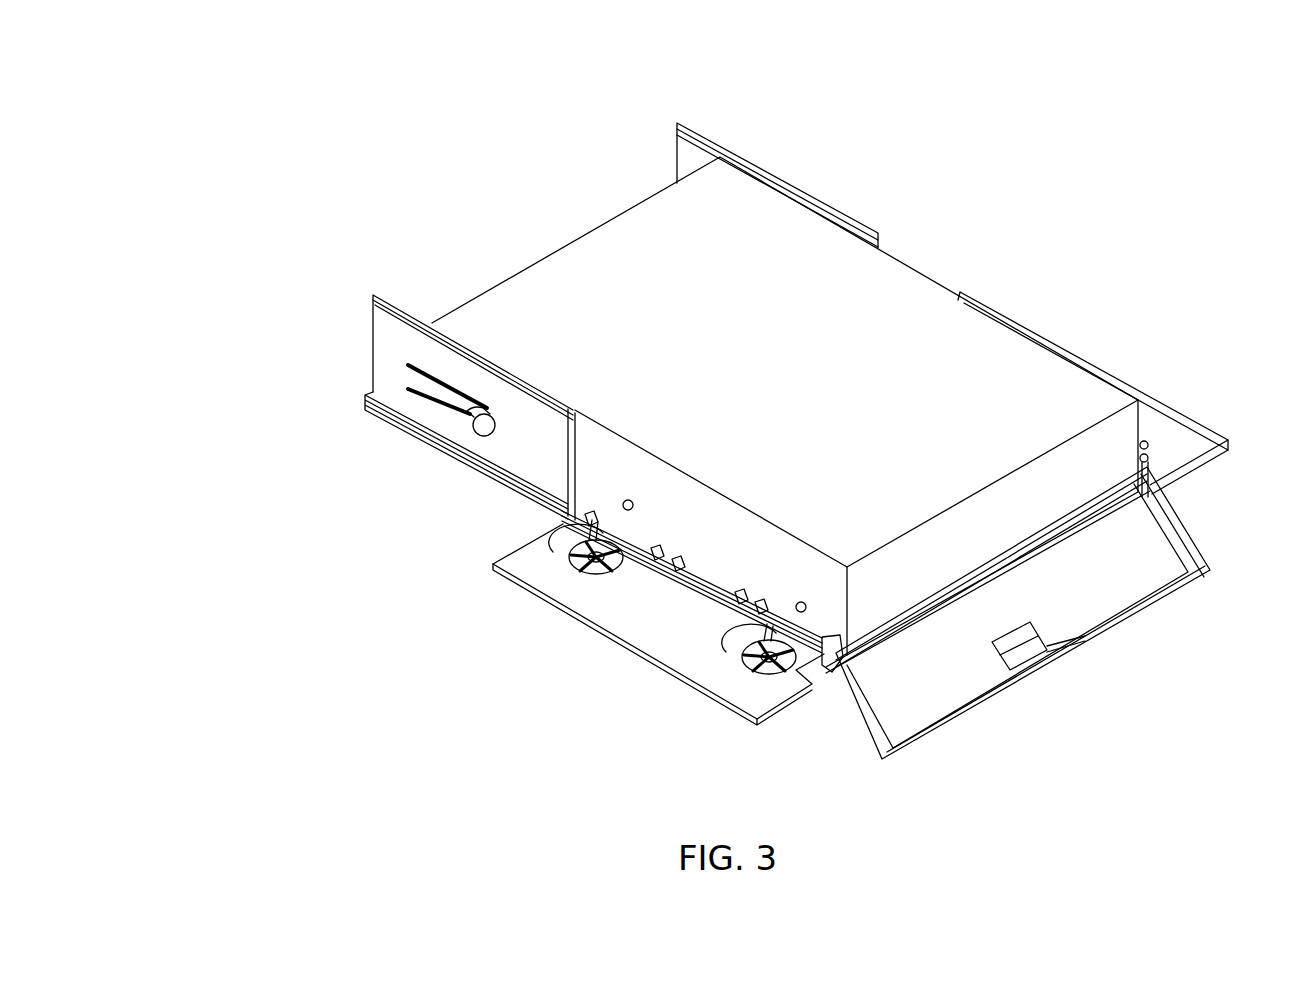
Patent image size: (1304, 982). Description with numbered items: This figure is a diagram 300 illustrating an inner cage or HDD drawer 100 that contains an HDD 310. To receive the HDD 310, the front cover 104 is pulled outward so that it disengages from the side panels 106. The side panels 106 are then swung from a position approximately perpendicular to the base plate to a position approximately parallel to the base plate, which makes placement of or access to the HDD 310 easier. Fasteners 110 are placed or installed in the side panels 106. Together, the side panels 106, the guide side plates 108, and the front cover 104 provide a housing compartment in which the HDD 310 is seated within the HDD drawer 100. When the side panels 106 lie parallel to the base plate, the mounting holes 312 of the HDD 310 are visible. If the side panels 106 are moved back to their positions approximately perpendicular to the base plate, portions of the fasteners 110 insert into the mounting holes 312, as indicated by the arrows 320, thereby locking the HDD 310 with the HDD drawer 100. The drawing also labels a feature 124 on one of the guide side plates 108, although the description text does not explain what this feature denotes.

The diagram 300 is at (222, 107).
The HDD drawer 100 is at (1018, 264).
The HDD 310 is at (776, 351).
The guide side plates 108 is at (679, 120).
The panel slot 124 is at (397, 423).
The mounting holes 312 is at (614, 505).
The arrows 320 is at (792, 600).
The fasteners 110 is at (768, 673).
The side panels 106 is at (1193, 437).
The front cover 104 is at (940, 677).